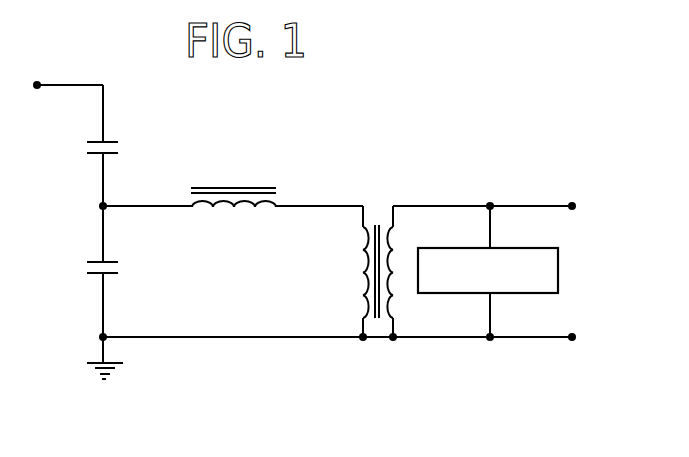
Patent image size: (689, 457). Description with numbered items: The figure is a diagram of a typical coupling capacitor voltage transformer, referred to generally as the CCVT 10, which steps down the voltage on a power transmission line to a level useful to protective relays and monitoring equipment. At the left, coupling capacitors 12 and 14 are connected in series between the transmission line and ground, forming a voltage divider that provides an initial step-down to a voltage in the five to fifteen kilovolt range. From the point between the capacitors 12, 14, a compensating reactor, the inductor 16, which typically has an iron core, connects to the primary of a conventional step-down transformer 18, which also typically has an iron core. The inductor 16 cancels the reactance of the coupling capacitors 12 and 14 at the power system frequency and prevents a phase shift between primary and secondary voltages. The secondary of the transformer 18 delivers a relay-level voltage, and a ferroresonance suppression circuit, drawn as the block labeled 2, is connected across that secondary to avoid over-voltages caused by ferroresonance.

The coupling capacitor voltage transformer 10 is at (408, 168).
The coupling capacitor 12 is at (115, 141).
The coupling capacitor 14 is at (113, 261).
The inductor 16 is at (244, 187).
The step-down transformer 18 is at (358, 270).
The suppression circuit 2 is at (558, 270).